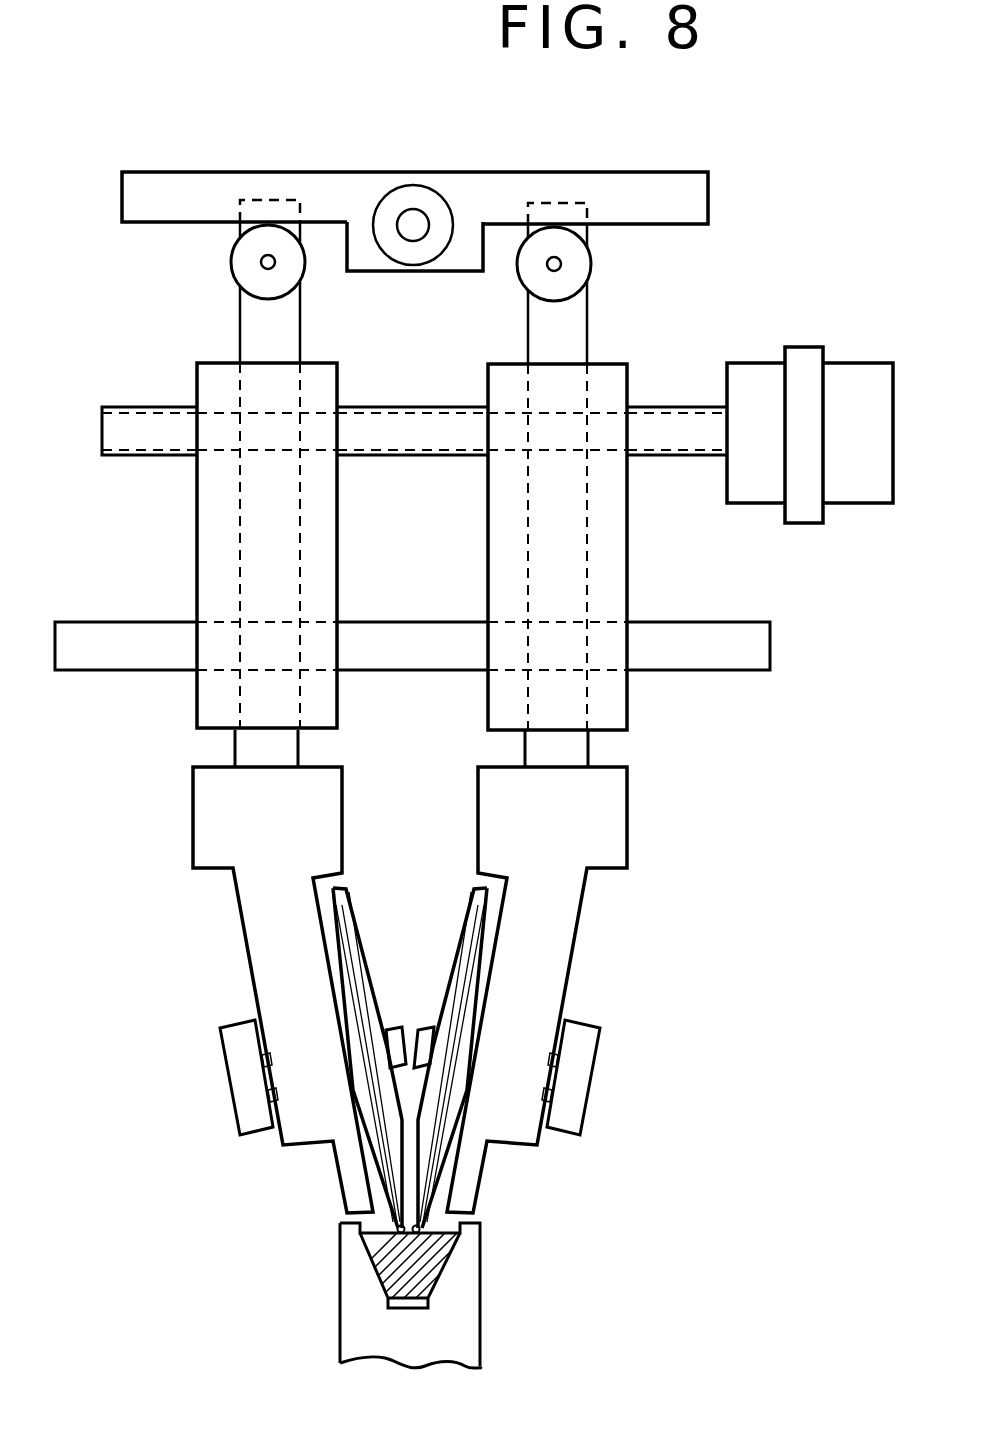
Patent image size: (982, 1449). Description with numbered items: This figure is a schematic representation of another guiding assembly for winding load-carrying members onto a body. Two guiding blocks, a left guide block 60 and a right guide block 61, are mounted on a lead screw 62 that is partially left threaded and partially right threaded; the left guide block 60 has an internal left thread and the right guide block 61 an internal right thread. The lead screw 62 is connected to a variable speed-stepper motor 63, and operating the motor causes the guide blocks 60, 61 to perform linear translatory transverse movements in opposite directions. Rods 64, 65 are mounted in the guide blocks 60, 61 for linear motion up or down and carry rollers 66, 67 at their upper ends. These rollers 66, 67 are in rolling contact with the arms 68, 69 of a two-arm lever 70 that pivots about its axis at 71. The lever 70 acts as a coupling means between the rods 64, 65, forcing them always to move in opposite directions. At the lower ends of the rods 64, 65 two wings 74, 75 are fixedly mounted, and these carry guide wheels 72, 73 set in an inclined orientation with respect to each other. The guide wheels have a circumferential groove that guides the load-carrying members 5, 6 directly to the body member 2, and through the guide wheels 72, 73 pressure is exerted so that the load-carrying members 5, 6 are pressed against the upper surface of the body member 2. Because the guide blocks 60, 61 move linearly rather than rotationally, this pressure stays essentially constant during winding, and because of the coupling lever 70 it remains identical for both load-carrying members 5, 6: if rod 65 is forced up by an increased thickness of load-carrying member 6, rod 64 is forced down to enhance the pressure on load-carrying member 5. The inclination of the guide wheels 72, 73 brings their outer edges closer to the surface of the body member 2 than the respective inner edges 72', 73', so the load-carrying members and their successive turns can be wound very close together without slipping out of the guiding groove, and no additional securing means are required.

The body member 2 is at (405, 1258).
The load-carrying member 5 is at (394, 1226).
The load-carrying member 6 is at (465, 1236).
The left guide block 60 is at (215, 540).
The right guide block 61 is at (613, 583).
The lead screw 62 is at (160, 428).
The variable speed-stepper motor 63 is at (862, 388).
The rod 64 is at (258, 320).
The rod 65 is at (567, 330).
The roller 66 is at (243, 248).
The roller 67 is at (556, 240).
The arm 68 is at (148, 187).
The arm 69 is at (668, 185).
The two-arm lever 70 is at (338, 185).
The lever axis 71 is at (413, 222).
The guide wheel 72 is at (305, 1058).
The inner edge of guide wheel 72' is at (378, 1016).
The guide wheel 73 is at (522, 1058).
The inner edge of guide wheel 73' is at (447, 1040).
The wing 74 is at (230, 810).
The wing 75 is at (605, 810).